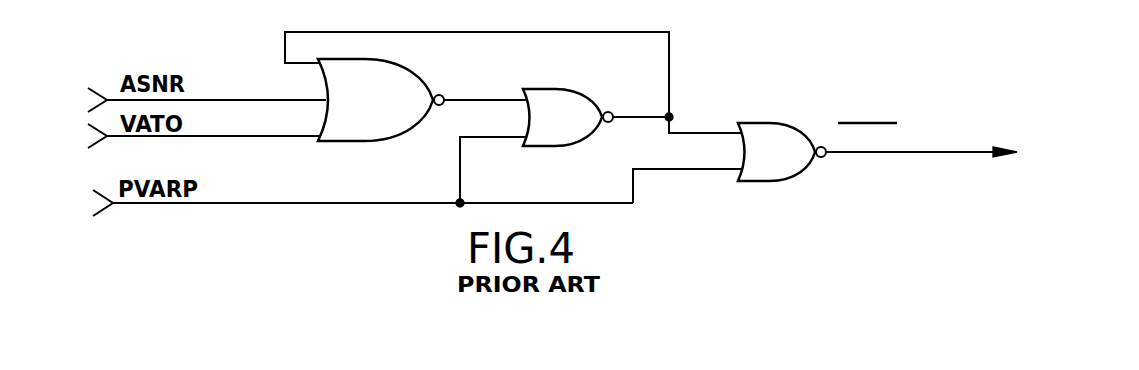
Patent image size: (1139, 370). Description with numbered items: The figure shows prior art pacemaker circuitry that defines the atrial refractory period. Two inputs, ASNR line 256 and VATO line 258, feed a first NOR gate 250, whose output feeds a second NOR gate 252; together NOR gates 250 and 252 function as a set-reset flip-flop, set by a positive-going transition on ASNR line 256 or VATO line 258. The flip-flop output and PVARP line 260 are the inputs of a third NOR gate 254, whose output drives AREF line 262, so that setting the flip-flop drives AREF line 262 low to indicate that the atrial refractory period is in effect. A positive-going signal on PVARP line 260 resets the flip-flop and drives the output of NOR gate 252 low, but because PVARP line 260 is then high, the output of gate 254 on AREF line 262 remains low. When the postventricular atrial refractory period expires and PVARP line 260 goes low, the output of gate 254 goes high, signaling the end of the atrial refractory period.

The NOR gate 250 is at (415, 82).
The NOR gate 252 is at (587, 96).
The NOR gate 254 is at (783, 108).
The ASNR line 256 is at (297, 99).
The VATO line 258 is at (295, 133).
The PVARP line 260 is at (312, 196).
The AREF line 262 is at (942, 152).